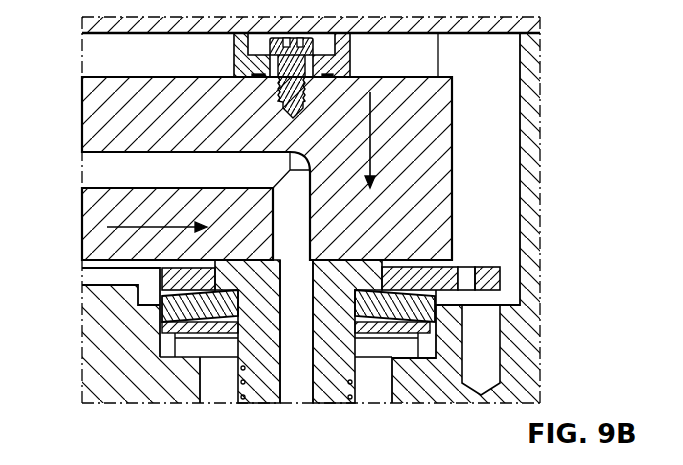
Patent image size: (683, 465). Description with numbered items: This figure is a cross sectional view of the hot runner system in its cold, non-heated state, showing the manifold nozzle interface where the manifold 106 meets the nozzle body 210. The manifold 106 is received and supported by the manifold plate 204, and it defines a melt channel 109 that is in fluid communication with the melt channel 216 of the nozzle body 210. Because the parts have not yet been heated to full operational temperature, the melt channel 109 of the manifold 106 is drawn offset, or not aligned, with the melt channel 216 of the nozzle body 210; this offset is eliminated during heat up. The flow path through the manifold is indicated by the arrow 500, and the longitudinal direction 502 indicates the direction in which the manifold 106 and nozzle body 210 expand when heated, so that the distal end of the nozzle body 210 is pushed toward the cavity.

The manifold 106 is at (206, 132).
The melt channel 109 is at (297, 230).
The fluid flow arrow 500 is at (128, 227).
The longitudinal direction 502 is at (369, 101).
The manifold plate 204 is at (150, 392).
The melt channel 216 is at (457, 387).
The nozzle body 210 is at (300, 358).